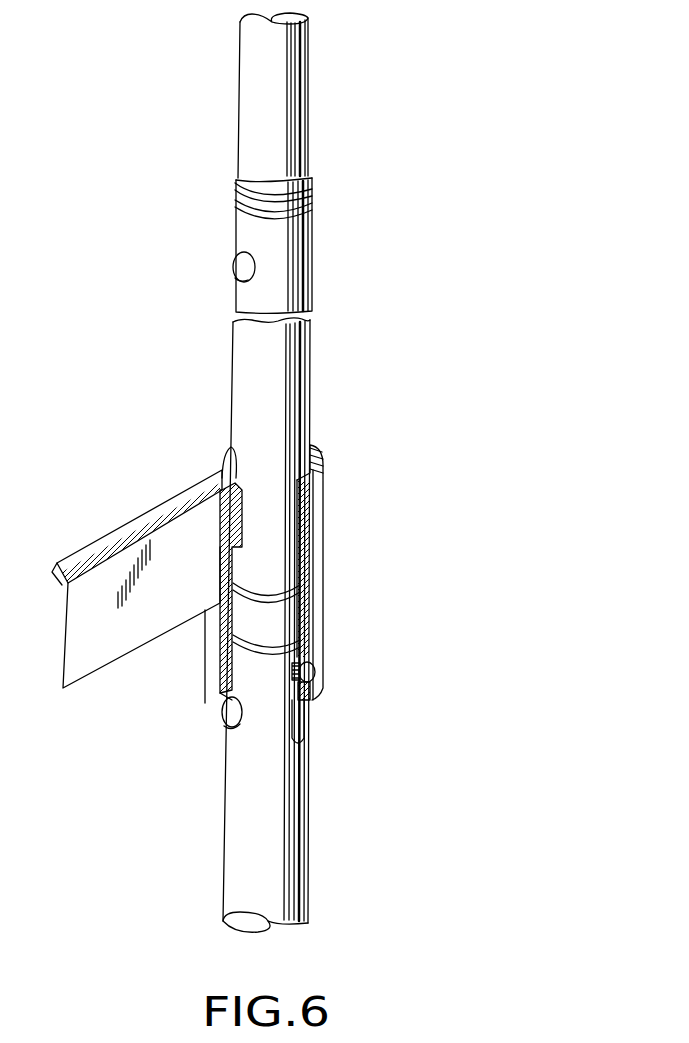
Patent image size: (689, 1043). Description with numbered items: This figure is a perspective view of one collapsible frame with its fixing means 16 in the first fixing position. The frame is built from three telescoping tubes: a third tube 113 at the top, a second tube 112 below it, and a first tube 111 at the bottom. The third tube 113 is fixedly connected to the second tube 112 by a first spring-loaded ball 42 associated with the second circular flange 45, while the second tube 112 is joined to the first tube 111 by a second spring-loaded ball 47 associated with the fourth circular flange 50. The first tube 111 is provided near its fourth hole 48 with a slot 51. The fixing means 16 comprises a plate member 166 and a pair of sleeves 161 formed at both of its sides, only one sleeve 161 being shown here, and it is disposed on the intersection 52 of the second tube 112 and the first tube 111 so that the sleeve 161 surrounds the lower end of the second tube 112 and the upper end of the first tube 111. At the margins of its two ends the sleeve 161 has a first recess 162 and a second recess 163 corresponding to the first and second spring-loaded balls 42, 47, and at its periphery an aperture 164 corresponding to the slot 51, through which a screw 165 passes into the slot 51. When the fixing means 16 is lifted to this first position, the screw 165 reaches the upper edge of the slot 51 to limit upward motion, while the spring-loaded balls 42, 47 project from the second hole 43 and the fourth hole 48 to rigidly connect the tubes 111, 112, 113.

The fixing means 16 is at (138, 510).
The first spring-loaded ball 42 is at (238, 263).
The second hole 43 is at (246, 281).
The second circular flange 45 is at (248, 217).
The second spring-loaded ball 47 is at (233, 717).
The fourth hole 48 is at (240, 728).
The fourth circular flange 50 is at (280, 645).
The slot 51 is at (300, 742).
The intersection 52 is at (300, 590).
The first tube 111 is at (309, 898).
The second tube 112 is at (312, 278).
The third tube 113 is at (309, 95).
The sleeve 161 is at (325, 512).
The first recess 162 is at (222, 467).
The second recess 163 is at (226, 704).
The aperture 164 is at (311, 700).
The screw 165 is at (313, 672).
The plate member 166 is at (100, 657).